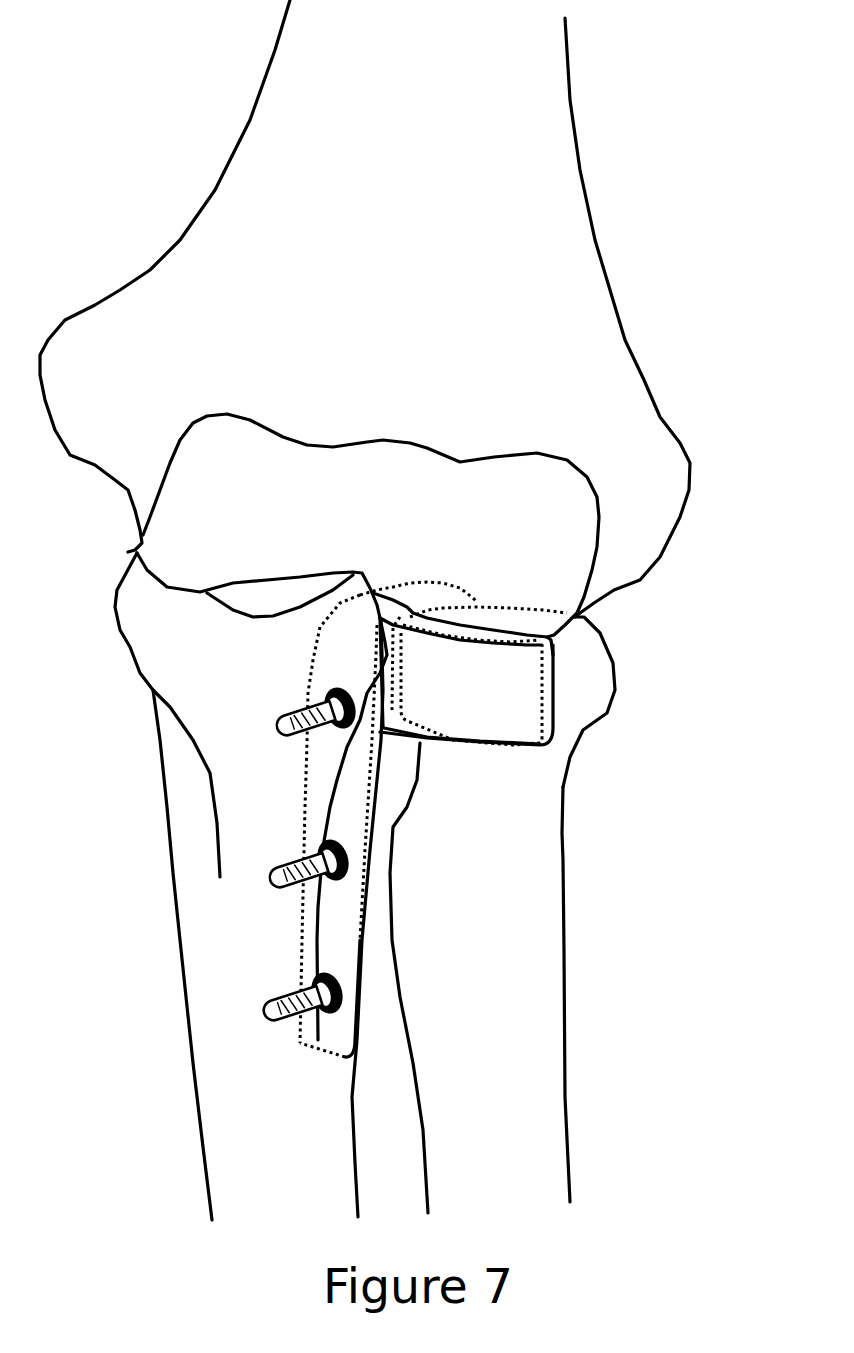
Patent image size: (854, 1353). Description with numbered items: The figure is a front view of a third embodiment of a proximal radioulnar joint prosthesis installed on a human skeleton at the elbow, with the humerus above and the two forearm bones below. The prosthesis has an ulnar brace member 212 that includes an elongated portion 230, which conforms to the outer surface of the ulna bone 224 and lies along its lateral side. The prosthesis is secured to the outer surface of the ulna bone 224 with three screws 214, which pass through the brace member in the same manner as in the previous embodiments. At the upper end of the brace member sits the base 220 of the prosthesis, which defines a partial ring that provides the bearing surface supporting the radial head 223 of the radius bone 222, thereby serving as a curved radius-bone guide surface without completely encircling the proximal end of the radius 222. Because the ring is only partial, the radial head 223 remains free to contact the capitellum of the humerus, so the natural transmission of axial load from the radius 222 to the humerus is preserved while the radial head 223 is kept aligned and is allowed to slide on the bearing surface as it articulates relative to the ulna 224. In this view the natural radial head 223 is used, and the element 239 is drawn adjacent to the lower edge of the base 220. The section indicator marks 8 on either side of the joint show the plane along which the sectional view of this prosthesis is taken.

The section line 8- 8 is at (125, 546).
The ulnar brace member 212 is at (288, 788).
The screws 214 is at (267, 893).
The base 220 is at (477, 720).
The radius bone 222 is at (544, 1133).
The radial head 223 is at (592, 690).
The ulna bone 224 is at (230, 1170).
The elongated portion 230 is at (333, 1033).
The collar of implant 239 is at (517, 747).